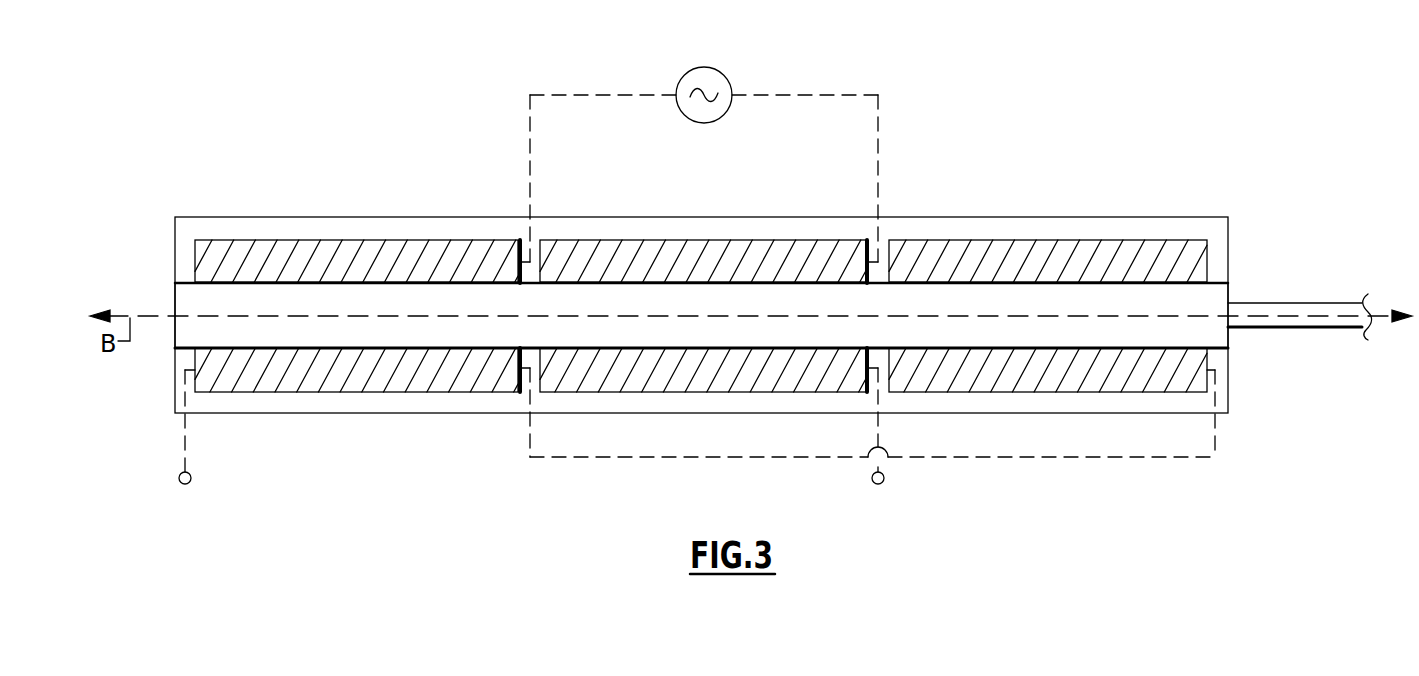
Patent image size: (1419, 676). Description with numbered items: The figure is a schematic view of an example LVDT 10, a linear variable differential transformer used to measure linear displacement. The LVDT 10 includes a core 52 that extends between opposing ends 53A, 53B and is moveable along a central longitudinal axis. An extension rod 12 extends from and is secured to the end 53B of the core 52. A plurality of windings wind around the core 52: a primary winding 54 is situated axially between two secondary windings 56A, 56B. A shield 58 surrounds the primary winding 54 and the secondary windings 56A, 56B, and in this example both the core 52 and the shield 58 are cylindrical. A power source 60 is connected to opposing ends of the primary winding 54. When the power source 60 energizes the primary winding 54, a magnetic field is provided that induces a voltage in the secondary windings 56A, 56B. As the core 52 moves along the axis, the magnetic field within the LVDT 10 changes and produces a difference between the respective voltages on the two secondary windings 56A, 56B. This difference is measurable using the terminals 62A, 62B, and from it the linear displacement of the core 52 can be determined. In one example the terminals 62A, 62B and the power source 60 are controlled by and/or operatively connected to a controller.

The LVDT 10 is at (1203, 167).
The extension rod 12 is at (1267, 303).
The core 52 is at (175, 295).
The end 53A is at (174, 333).
The end 53B is at (1229, 334).
The primary winding 54 is at (650, 240).
The secondary winding 56A is at (310, 240).
The secondary winding 56B is at (1088, 240).
The shield 58 is at (206, 217).
The power source 60 is at (685, 75).
The terminal 62A is at (179, 484).
The terminal 62B is at (873, 484).